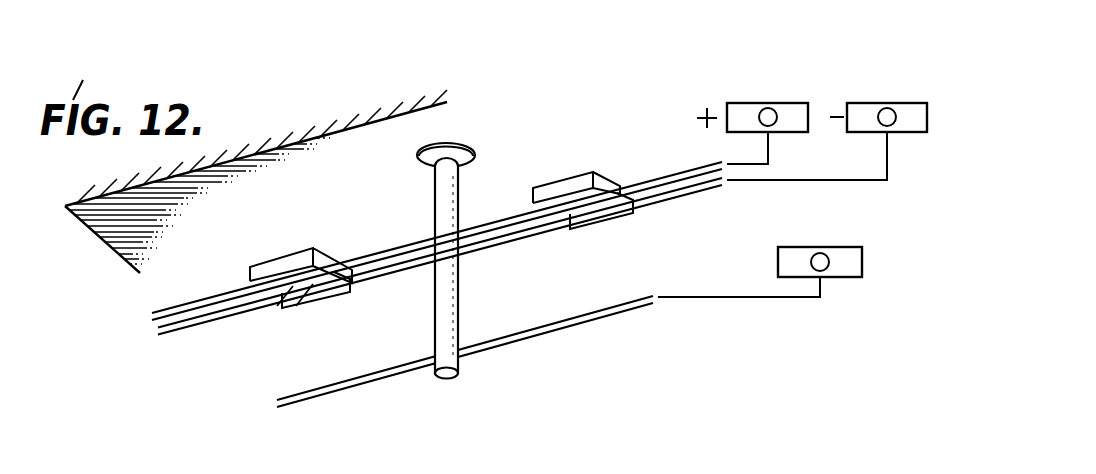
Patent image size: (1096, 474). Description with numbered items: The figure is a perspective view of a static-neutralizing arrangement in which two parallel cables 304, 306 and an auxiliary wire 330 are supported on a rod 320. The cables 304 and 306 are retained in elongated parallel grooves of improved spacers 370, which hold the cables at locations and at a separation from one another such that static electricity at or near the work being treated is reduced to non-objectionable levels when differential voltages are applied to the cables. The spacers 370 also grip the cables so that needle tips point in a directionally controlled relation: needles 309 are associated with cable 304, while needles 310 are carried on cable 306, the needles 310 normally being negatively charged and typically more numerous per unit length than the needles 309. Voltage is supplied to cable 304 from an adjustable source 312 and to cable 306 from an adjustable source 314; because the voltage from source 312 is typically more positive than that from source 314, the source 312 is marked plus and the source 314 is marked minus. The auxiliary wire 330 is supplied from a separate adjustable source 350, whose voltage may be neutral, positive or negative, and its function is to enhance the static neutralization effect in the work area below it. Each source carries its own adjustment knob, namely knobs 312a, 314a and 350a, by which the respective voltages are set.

The cable 304 is at (490, 247).
The cable 306 is at (385, 251).
The needles 309 is at (592, 219).
The needles 310 is at (297, 283).
The voltage source 312 is at (730, 103).
The adjustment knob 312a is at (766, 103).
The voltage source 314 is at (853, 103).
The adjustment knob 314a is at (887, 103).
The rod 320 is at (461, 362).
The auxiliary wire 330 is at (343, 388).
The voltage source 350 is at (778, 258).
The adjustment knob 350a is at (828, 269).
The spacer 370 is at (249, 268).